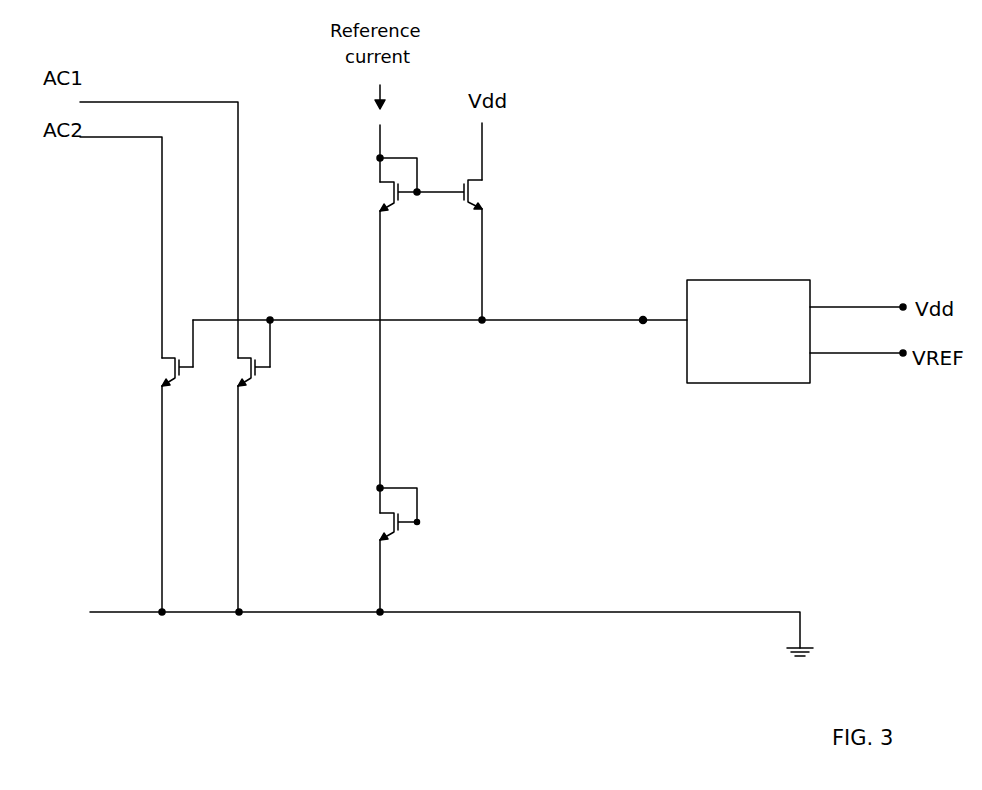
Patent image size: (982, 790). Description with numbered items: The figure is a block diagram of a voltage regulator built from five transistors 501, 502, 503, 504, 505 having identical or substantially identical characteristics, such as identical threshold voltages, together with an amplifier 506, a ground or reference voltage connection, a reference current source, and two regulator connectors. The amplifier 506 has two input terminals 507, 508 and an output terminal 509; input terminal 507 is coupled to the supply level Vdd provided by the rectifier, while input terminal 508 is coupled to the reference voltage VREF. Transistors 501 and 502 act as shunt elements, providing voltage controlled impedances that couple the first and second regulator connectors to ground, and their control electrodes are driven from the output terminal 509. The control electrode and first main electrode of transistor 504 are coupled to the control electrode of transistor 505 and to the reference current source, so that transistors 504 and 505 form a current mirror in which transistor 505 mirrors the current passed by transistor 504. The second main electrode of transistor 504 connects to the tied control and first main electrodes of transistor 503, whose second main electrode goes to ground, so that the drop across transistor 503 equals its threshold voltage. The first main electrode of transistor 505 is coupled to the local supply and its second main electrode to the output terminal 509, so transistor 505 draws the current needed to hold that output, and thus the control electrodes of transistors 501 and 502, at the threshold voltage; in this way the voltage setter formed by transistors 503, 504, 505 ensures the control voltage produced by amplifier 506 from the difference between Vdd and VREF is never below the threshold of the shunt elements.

The transistor 501 is at (157, 372).
The transistor 502 is at (234, 372).
The transistor 503 is at (381, 512).
The transistor 504 is at (381, 183).
The transistor 505 is at (467, 194).
The amplifier 506 is at (748, 331).
The input terminal 507 is at (858, 298).
The input terminal 508 is at (858, 343).
The output terminal 509 is at (641, 310).